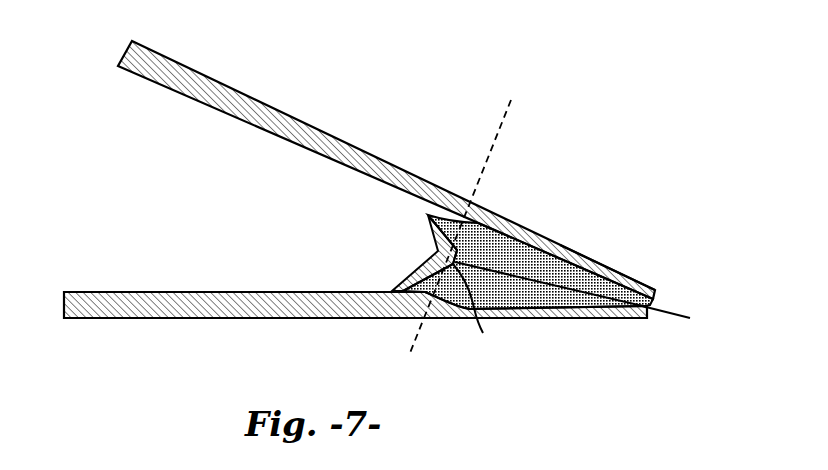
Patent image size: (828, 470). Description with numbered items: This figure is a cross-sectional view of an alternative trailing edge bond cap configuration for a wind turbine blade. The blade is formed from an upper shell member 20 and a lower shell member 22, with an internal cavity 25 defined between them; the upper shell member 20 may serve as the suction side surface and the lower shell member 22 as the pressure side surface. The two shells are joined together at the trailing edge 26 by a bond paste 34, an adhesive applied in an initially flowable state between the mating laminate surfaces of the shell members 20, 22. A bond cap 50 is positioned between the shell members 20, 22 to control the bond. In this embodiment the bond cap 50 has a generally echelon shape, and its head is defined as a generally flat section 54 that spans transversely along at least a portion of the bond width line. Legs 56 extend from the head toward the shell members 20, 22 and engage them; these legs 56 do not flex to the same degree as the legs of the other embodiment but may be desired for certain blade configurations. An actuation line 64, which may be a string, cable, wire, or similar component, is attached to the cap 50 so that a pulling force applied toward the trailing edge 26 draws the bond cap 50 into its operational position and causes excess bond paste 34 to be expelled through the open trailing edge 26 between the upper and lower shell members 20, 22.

The upper shell member 20 is at (272, 90).
The lower shell member 22 is at (150, 322).
The internal cavity 25 is at (146, 240).
The trailing edge 26 is at (629, 254).
The bond paste 34 is at (497, 257).
The bond cap 50 is at (356, 230).
The generally flat section 54 is at (483, 333).
The legs 56 is at (426, 221).
The actuation line 64 is at (663, 311).